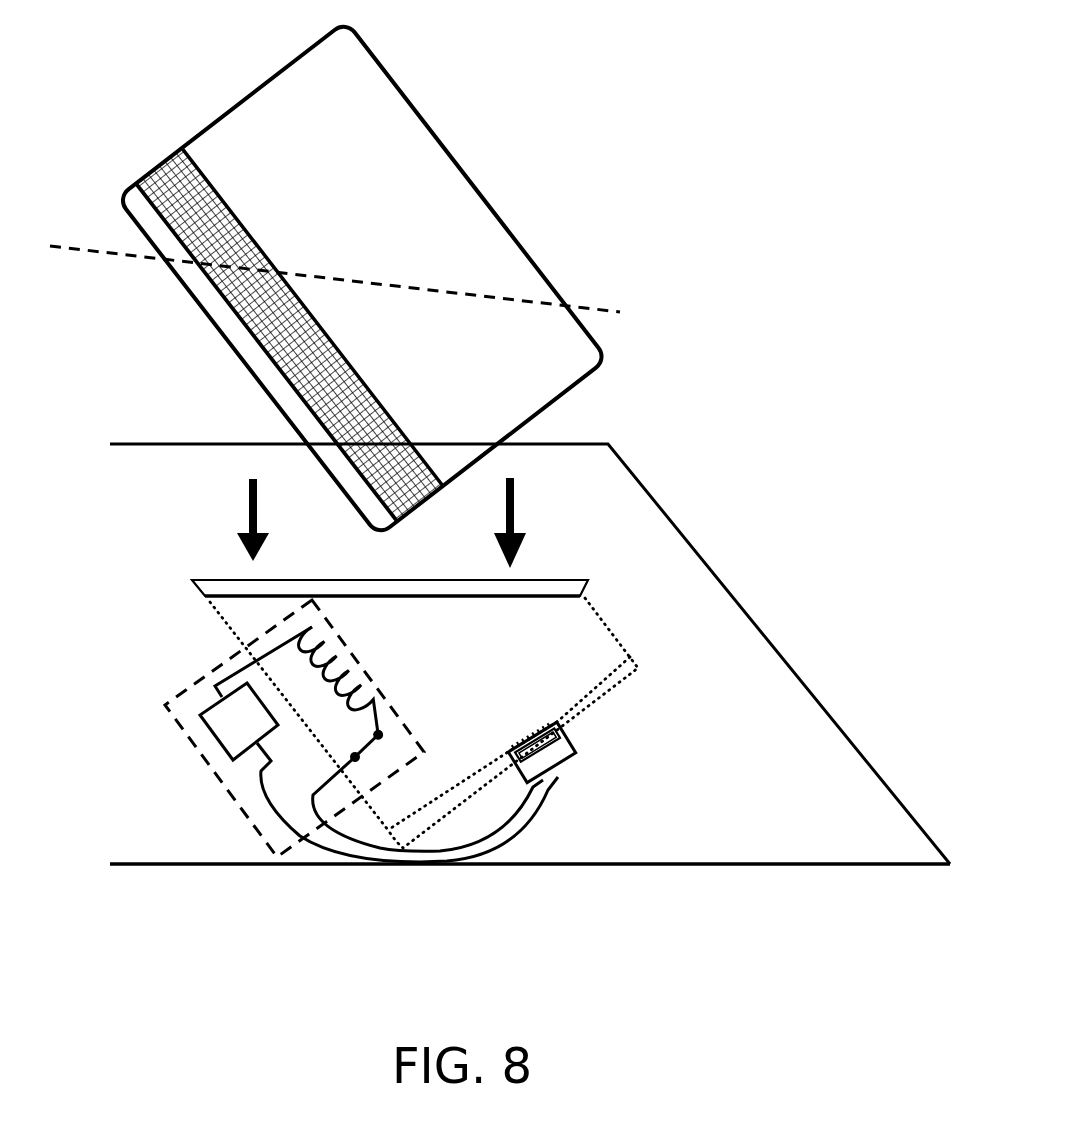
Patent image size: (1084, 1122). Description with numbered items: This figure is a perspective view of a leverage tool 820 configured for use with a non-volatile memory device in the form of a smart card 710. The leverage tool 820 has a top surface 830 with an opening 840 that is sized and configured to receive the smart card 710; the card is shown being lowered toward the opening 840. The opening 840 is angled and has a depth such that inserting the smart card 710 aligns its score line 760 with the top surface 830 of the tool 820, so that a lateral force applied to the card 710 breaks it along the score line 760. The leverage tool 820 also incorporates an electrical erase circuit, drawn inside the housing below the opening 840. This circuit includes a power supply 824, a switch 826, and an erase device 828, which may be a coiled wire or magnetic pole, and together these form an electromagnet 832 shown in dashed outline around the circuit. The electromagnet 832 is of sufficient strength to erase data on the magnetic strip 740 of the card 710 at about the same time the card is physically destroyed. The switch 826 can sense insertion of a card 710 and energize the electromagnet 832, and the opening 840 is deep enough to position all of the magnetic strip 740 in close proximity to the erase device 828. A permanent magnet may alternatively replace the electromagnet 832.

The smart card 710 is at (317, 277).
The magnetic strip 740 is at (158, 174).
The score line 760 is at (600, 305).
The leverage tool 820 is at (717, 466).
The top surface 830 is at (782, 806).
The opening 840 is at (558, 569).
The electromagnet 832 is at (190, 745).
The power supply 824 is at (260, 733).
The erase device 828 is at (402, 717).
The switch 826 is at (563, 757).